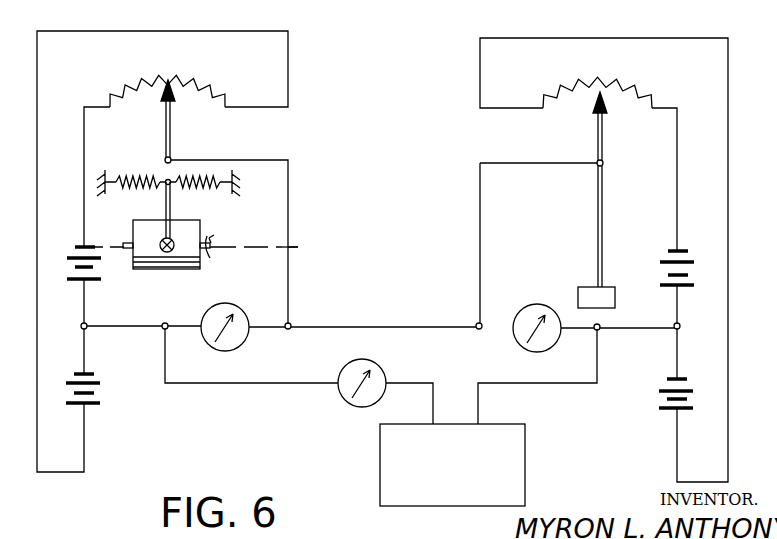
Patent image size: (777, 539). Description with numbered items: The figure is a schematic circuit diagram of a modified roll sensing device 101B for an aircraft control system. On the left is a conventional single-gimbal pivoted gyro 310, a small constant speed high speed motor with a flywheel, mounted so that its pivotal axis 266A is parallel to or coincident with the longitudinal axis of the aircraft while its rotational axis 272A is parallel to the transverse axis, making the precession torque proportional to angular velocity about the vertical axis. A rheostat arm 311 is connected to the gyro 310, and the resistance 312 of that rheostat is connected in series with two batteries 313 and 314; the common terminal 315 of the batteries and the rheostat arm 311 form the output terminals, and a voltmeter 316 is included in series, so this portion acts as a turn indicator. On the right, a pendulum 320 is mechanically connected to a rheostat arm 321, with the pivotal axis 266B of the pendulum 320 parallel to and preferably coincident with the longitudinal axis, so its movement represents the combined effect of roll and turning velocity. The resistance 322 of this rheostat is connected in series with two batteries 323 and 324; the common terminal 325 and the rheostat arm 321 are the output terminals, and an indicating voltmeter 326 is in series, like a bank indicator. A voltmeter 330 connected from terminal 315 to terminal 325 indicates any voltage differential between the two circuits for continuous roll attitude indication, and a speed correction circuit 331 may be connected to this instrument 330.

The roll sensing device 101B is at (400, 135).
The pivotal axis of the gyro 266A is at (165, 252).
The pivotal axis of the pendulum 266B is at (597, 162).
The rotational axis of the gyro 272A is at (303, 248).
The gyro 310 is at (190, 230).
The rheostat arm 311 is at (171, 134).
The resistance 312 is at (128, 82).
The battery 313 is at (85, 247).
The battery 314 is at (96, 390).
The common terminal 315 is at (88, 324).
The voltmeter 316 is at (237, 306).
The pendulum 320 is at (602, 196).
The rheostat arm 321 is at (603, 150).
The resistance 322 is at (606, 90).
The battery 323 is at (665, 262).
The battery 324 is at (660, 398).
The common terminal 325 is at (676, 325).
The voltmeter 326 is at (542, 282).
The voltmeter 330 is at (400, 357).
The speed correction circuit 331 is at (380, 461).